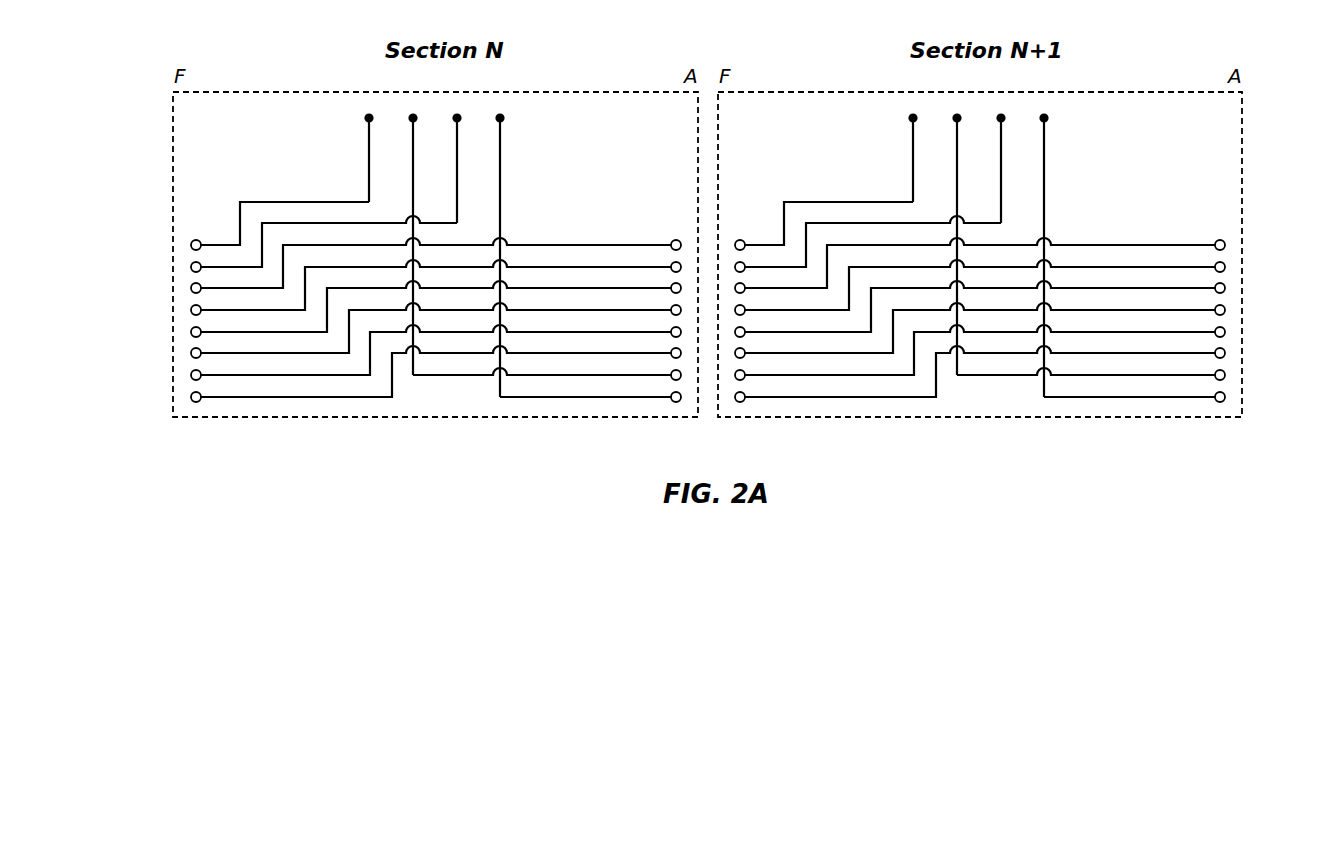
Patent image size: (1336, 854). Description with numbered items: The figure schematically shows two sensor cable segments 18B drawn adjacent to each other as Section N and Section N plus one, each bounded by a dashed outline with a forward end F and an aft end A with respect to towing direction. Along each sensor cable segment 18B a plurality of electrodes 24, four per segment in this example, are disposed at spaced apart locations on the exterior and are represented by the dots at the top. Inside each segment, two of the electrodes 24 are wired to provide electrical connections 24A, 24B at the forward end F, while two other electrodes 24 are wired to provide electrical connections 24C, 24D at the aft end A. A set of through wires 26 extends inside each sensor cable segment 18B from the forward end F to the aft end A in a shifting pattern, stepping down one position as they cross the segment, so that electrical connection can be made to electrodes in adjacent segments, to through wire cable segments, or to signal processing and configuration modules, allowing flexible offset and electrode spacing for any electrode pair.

The sensor cable segment 18B is at (173, 146).
The electrodes 24 is at (369, 148).
The electrical connection 24A is at (190, 245).
The electrical connection 24B is at (190, 267).
The electrical connection 24C is at (545, 377).
The electrical connection 24D is at (633, 399).
The through wires 26 is at (190, 288).